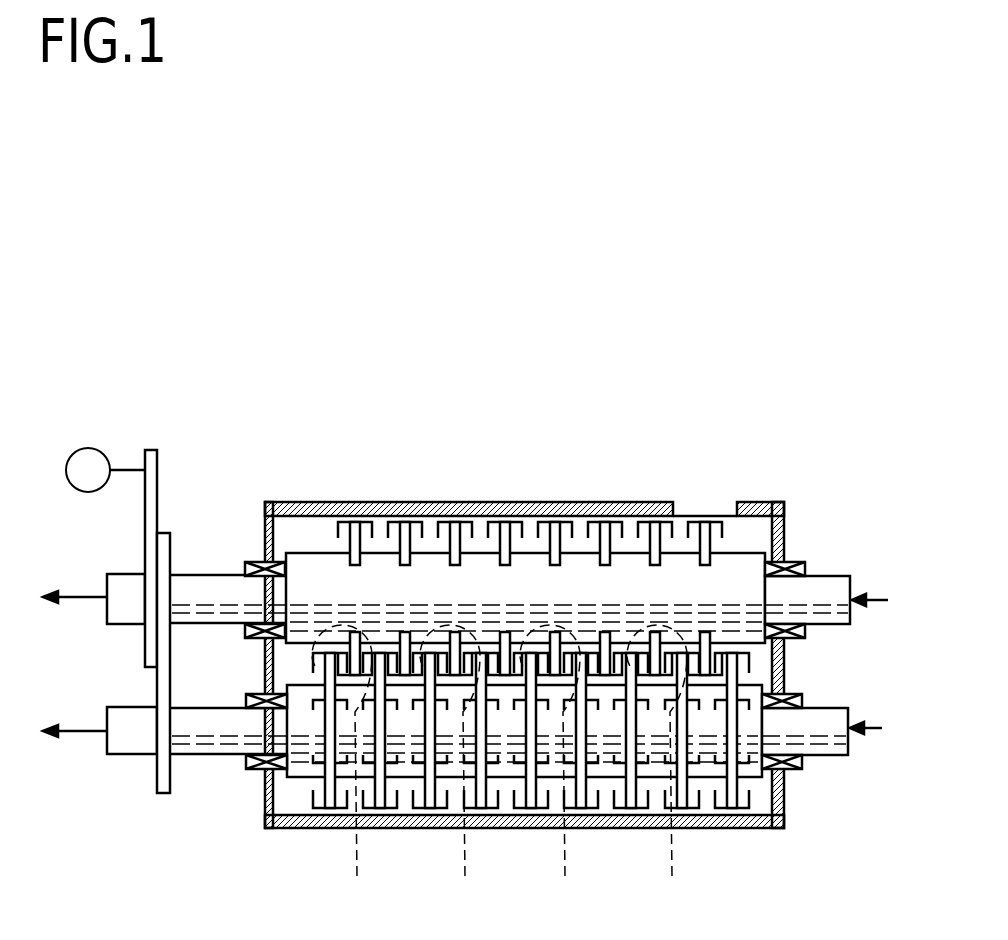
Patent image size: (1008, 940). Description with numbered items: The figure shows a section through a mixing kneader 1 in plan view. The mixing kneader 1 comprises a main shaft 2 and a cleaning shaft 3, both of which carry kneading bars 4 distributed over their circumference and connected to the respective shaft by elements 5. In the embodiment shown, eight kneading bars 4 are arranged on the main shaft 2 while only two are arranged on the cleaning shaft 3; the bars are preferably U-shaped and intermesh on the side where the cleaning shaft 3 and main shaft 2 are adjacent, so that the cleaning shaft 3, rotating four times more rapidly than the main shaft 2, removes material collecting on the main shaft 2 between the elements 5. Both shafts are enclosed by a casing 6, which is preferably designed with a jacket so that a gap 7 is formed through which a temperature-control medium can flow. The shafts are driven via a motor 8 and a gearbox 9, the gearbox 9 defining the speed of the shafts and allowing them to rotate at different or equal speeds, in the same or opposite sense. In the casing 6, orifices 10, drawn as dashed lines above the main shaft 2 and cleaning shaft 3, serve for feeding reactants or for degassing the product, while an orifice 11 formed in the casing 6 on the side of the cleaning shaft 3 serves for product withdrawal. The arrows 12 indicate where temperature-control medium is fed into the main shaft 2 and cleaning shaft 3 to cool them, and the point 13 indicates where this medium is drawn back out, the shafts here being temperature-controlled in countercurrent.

The mixing kneader 1 is at (290, 493).
The main shaft 2 is at (300, 784).
The cleaning shaft 3 is at (322, 548).
The kneading bars 4 is at (446, 522).
The elements 5 is at (511, 545).
The casing 6 is at (785, 520).
The gap 7 is at (590, 503).
The motor 8 is at (92, 448).
The gearbox 9 is at (157, 782).
The orifices 10 is at (503, 765).
The orifice 11 is at (705, 516).
The temperature-control medium feed point 12 is at (873, 600).
The temperature-control medium withdrawal point 13 is at (73, 597).